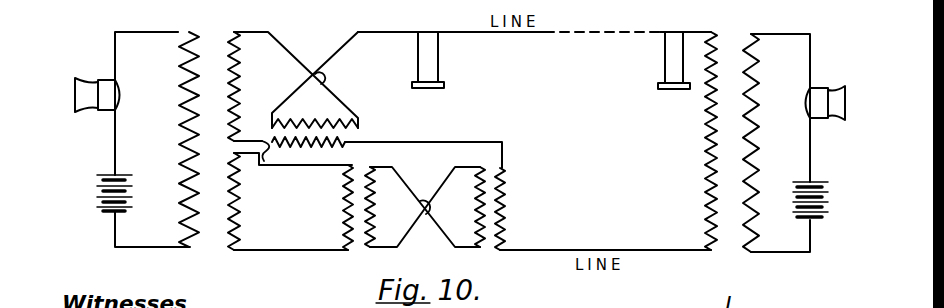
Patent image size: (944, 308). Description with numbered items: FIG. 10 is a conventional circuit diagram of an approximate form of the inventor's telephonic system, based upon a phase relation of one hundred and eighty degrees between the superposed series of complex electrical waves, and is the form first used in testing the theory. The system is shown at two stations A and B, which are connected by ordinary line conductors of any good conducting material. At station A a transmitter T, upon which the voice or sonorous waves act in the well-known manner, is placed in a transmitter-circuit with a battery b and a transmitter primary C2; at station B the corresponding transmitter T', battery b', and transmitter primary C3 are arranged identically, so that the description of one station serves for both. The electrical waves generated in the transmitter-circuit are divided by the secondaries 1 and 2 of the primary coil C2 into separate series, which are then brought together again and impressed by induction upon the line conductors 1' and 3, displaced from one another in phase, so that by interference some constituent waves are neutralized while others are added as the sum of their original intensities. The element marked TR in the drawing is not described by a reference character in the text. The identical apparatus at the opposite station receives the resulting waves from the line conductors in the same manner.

The station A is at (181, 20).
The station B is at (721, 132).
The transmitter T is at (95, 83).
The transmitter T' is at (826, 92).
The transmitter primary C2 is at (162, 114).
The transmitter primary C3 is at (800, 144).
The battery b is at (101, 163).
The battery b' is at (817, 167).
The secondary 1 is at (290, 201).
The line 1' is at (538, 76).
The secondary 2 is at (365, 100).
The line 3 is at (405, 218).
The transmitter TR is at (551, 70).